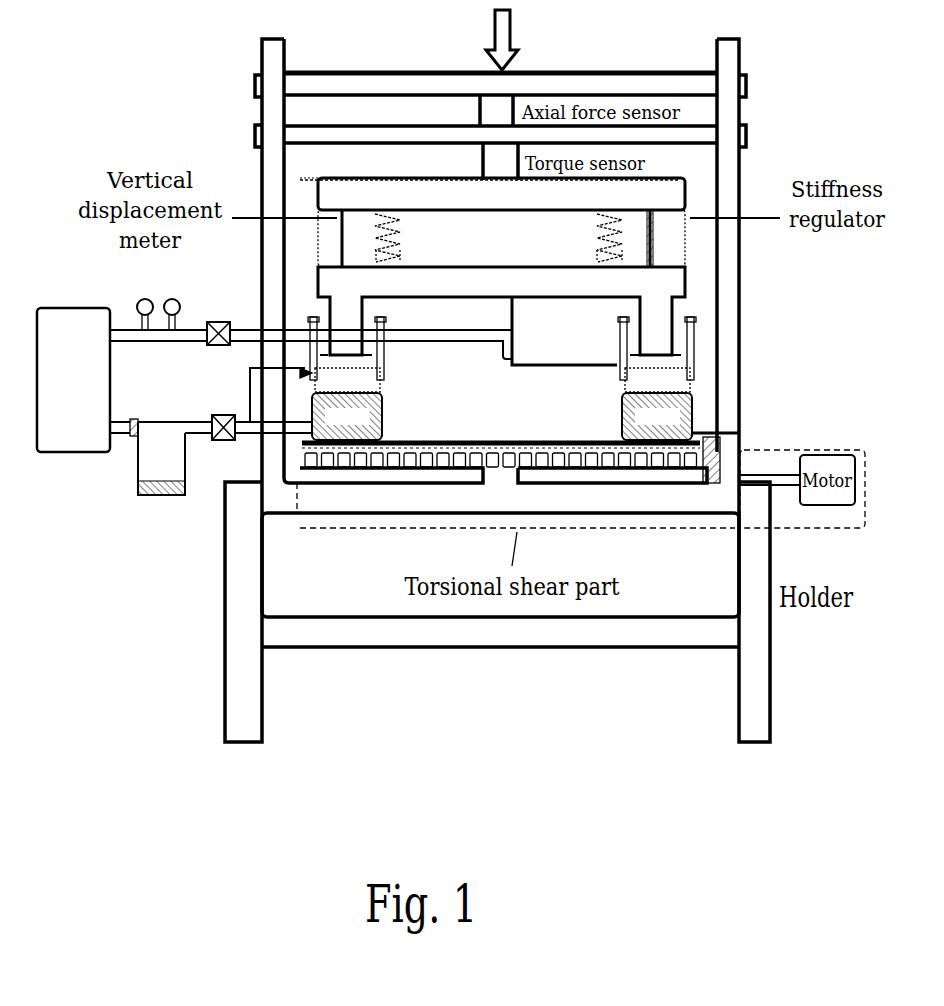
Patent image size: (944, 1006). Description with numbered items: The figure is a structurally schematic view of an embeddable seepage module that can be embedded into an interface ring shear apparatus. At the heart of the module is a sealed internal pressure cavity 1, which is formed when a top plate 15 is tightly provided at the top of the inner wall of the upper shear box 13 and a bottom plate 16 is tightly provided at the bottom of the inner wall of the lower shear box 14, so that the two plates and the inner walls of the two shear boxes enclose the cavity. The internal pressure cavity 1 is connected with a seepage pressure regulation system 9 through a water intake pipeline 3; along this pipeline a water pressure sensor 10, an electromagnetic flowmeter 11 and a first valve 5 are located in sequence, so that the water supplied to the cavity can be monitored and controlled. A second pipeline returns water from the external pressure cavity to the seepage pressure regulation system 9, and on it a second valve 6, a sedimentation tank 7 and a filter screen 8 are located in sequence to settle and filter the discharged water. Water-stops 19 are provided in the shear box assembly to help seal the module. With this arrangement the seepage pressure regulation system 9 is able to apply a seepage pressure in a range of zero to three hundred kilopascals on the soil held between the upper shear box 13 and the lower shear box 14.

The internal pressure cavity 1 is at (501, 432).
The water intake pipeline 3 is at (372, 334).
The first valve 5 is at (218, 320).
The second valve 6 is at (223, 417).
The sedimentation tank 7 is at (161, 458).
The filter screen 8 is at (135, 415).
The seepage pressure regulation system 9 is at (73, 380).
The water pressure sensor 10 is at (174, 303).
The electromagnetic flowmeter 11 is at (147, 303).
The upper shear box 13 is at (372, 379).
The lower shear box 14 is at (384, 417).
The top plate 15 is at (570, 365).
The bottom plate 16 is at (568, 441).
The water-stop 19 is at (695, 432).